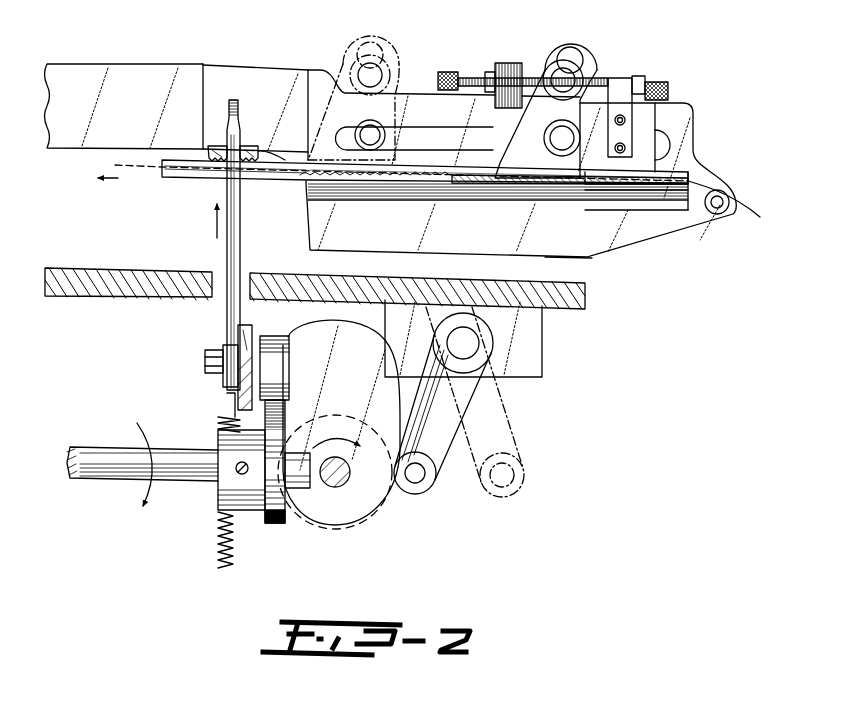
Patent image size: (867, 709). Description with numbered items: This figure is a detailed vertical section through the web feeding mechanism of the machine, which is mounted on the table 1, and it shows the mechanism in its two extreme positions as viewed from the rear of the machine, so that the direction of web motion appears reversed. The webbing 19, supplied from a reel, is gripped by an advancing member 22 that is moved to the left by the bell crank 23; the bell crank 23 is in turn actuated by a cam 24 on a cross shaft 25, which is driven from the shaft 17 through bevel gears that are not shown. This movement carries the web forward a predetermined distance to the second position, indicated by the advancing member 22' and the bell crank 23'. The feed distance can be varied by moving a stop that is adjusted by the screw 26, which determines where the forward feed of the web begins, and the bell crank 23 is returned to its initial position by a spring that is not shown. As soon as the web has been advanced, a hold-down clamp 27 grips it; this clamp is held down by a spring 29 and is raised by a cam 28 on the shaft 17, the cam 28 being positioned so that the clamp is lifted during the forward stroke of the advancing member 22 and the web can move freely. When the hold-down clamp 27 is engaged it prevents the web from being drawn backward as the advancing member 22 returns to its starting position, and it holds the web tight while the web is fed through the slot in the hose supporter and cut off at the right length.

The table 1 is at (131, 271).
The shaft 17 is at (188, 459).
The webbing 19 is at (455, 176).
The advancing member 22 is at (546, 111).
The advancing member (second position) 22' is at (400, 98).
The bell crank 23 is at (443, 403).
The bell crank (second position) 23' is at (495, 402).
The cam 24 is at (366, 387).
The cross shaft 25 is at (336, 487).
The screw 26 is at (474, 76).
The hold-down clamp 27 is at (247, 146).
The cam 28 is at (285, 524).
The spring 29 is at (217, 548).